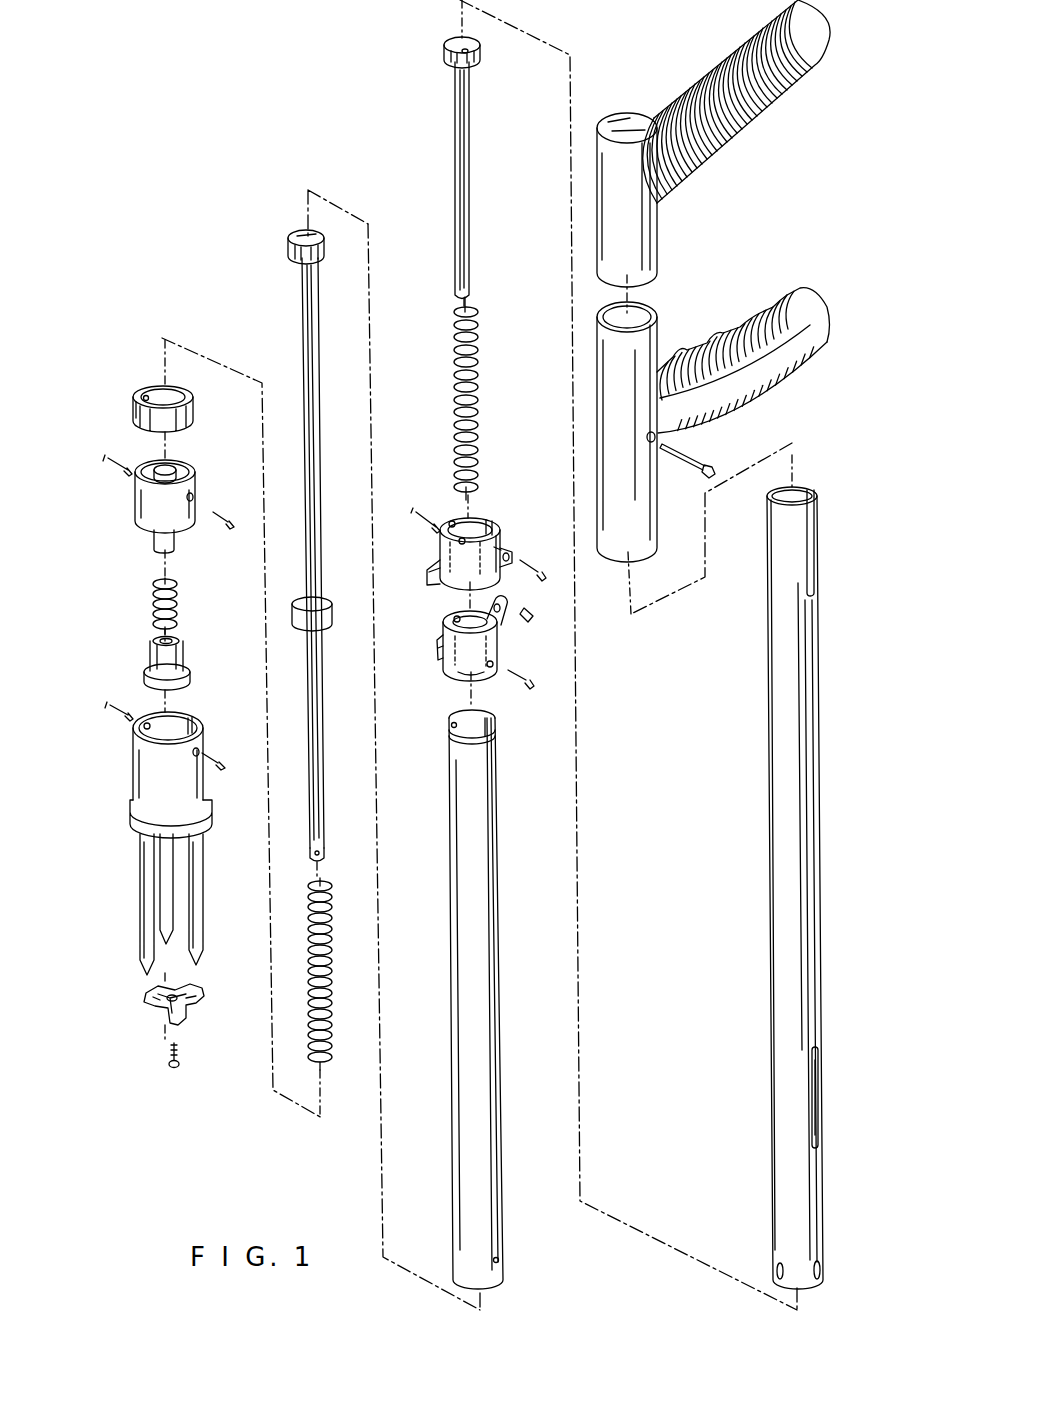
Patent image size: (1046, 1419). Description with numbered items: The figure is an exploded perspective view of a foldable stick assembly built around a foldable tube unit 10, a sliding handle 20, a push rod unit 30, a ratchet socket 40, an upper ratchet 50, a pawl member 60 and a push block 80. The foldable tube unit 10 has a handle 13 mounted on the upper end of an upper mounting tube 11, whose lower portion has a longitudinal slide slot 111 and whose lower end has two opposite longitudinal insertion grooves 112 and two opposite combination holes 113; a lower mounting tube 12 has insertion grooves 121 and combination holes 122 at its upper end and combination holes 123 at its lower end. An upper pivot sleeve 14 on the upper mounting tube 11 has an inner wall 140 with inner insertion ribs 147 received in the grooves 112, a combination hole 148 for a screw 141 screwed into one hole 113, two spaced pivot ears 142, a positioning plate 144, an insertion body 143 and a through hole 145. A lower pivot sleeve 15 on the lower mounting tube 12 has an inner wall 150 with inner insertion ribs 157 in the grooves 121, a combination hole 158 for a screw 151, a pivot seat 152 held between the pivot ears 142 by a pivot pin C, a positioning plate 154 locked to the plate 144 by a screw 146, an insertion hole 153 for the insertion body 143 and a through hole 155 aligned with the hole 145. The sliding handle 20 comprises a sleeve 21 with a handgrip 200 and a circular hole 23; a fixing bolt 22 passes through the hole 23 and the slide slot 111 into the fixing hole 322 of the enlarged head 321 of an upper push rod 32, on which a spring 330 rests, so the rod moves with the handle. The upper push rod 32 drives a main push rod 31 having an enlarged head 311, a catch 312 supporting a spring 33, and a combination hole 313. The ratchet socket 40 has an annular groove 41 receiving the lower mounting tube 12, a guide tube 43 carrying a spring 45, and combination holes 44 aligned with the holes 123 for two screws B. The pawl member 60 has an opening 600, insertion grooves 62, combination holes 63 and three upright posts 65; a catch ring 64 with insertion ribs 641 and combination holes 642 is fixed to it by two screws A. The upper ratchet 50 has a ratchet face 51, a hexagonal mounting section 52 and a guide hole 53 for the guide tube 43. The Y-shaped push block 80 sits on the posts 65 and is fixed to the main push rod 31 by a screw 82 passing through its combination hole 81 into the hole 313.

The foldable tube unit 10 is at (665, 660).
The upper mounting tube 11 is at (781, 888).
The longitudinal slide slot 111 is at (817, 1092).
The longitudinal insertion grooves 112 is at (730, 1228).
The combination holes 113 is at (820, 1266).
The lower mounting tube 12 is at (482, 999).
The longitudinal insertion grooves 121 is at (454, 750).
The combination holes 122 is at (494, 750).
The combination holes 123 is at (498, 1260).
The handle 13 is at (747, 127).
The upper pivot sleeve 14 is at (468, 524).
The inner wall 140 is at (498, 537).
The screw 141 is at (405, 498).
The pivot ears 142 is at (410, 547).
The insertion body 143 is at (512, 596).
The positioning plate 144 is at (500, 550).
The through hole 145 is at (480, 520).
The screw 146 is at (537, 570).
The inner insertion ribs 147 is at (492, 520).
The combination hole 148 is at (452, 521).
The lower pivot sleeve 15 is at (468, 675).
The inner wall 150 is at (410, 660).
The screw 151 is at (498, 676).
The pivot seat 152 is at (441, 666).
The insertion hole 153 is at (410, 625).
The positioning plate 154 is at (500, 618).
The through hole 155 is at (410, 593).
The inner insertion ribs 157 is at (526, 672).
The combination hole 158 is at (506, 720).
The sliding handle 20 is at (721, 391).
The handgrip 200 is at (800, 300).
The sleeve 21 is at (658, 330).
The fixing bolt 22 is at (688, 462).
The circular hole 23 is at (657, 438).
The push rod unit 30 is at (375, 535).
The main push rod 31 is at (283, 540).
The enlarged head 311 is at (288, 245).
The catch 312 is at (325, 603).
The combination hole 313 is at (322, 848).
The upper push rod 32 is at (451, 149).
The enlarged head 321 is at (405, 17).
The fixing hole 322 is at (504, 65).
The spring 33 is at (330, 942).
The spring 330 is at (445, 300).
The ratchet socket 40 is at (154, 499).
The annular groove 41 is at (176, 468).
The guide tube 43 is at (156, 543).
The combination holes 44 is at (194, 496).
The spring 45 is at (178, 604).
The upper ratchet 50 is at (158, 651).
The ratchet face 51 is at (190, 681).
The hexagonal mounting section 52 is at (186, 656).
The guide hole 53 is at (156, 639).
The pawl member 60 is at (156, 820).
The opening 600 is at (143, 727).
The longitudinal insertion grooves 62 is at (192, 722).
The combination holes 63 is at (200, 752).
The catch ring 64 is at (146, 368).
The longitudinal insertion ribs 641 is at (134, 415).
The combination holes 642 is at (146, 397).
The upright posts 65 is at (144, 890).
The push block 80 is at (175, 1018).
The combination hole 81 is at (190, 993).
The screw 82 is at (174, 1070).
The screws A is at (224, 768).
The screws B is at (231, 526).
The pivot pin C is at (520, 598).